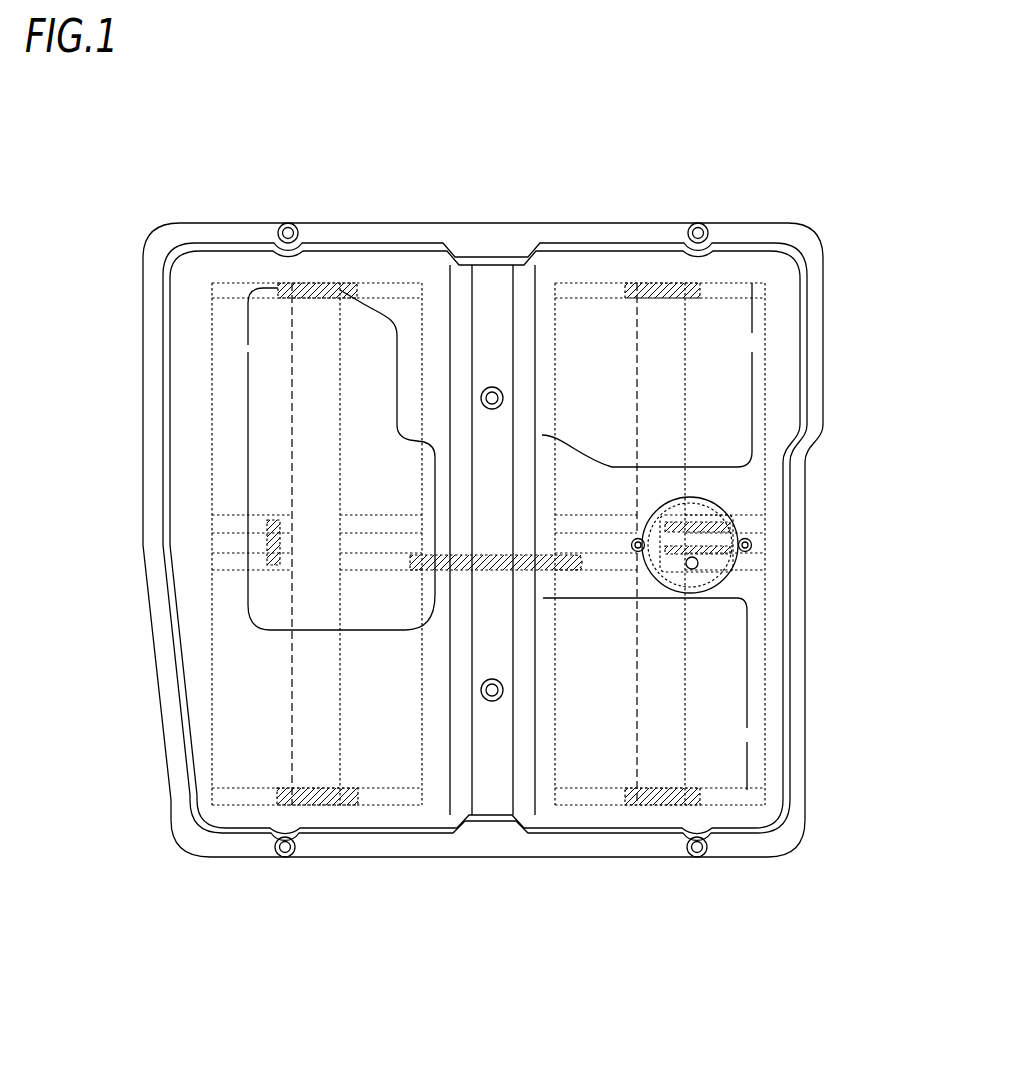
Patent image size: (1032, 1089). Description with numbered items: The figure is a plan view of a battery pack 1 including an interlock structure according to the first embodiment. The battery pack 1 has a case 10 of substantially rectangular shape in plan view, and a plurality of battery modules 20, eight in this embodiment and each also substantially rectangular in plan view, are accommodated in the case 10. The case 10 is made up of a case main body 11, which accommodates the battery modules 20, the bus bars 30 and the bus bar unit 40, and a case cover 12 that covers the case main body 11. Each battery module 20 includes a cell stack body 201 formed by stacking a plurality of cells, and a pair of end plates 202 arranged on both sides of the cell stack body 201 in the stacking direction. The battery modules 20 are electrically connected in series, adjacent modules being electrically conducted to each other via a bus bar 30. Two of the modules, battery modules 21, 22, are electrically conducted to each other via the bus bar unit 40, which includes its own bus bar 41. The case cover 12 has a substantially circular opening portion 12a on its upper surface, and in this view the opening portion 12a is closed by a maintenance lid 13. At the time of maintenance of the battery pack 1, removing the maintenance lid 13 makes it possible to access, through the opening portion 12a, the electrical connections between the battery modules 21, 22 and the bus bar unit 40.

The battery pack 1 is at (138, 175).
The case 10 is at (240, 152).
The case main body 11 is at (233, 222).
The case cover 12 is at (326, 243).
The opening portion 12a is at (760, 540).
The maintenance lid 13 is at (690, 497).
The battery module 20 is at (330, 372).
The cell stack body 201 is at (212, 448).
The end plate 202 is at (212, 292).
The battery module 21 is at (770, 423).
The battery module 22 is at (770, 637).
The bus bar 30 is at (318, 283).
The bus bar unit 40 is at (728, 568).
The bus bar 41 is at (755, 535).